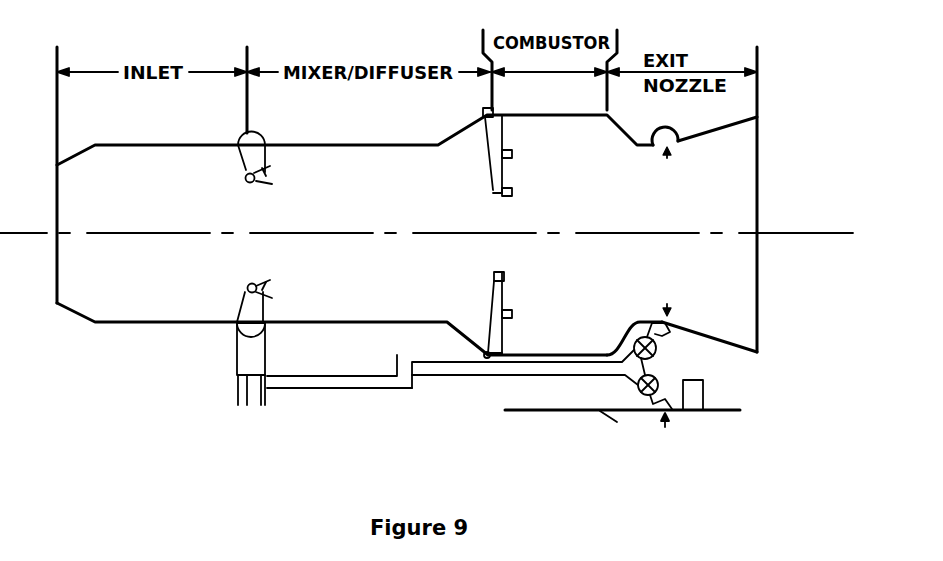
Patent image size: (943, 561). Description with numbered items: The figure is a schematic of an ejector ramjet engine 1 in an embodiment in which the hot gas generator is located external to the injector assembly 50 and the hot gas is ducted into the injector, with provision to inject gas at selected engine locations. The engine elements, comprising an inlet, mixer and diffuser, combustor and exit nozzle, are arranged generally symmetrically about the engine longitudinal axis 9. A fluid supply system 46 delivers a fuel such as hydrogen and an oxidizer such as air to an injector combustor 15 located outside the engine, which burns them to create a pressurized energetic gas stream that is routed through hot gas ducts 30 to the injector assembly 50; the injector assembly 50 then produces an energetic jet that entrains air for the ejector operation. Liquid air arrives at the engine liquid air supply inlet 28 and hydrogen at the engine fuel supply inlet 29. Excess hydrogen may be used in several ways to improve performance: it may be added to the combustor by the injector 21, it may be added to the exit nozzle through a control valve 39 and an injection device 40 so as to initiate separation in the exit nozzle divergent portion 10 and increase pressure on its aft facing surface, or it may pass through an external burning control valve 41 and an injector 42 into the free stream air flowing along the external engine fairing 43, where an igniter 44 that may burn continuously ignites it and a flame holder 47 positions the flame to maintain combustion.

The ejector ramjet engine 1 is at (128, 343).
The engine longitudinal axis 9 is at (815, 233).
The exit nozzle divergent portion 10 is at (724, 338).
The injector combustor 15 is at (245, 343).
The fuel injector 21 is at (503, 167).
The engine liquid air supply inlet 28 is at (237, 392).
The engine fuel supply inlet 29 is at (268, 397).
The hot gas duct 30 is at (240, 137).
The control valve 39 is at (658, 352).
The injection device 40 is at (680, 138).
The external burning control valve 41 is at (643, 398).
The injector 42 is at (675, 413).
The external engine fairing 43 is at (532, 412).
The igniter 44 is at (703, 388).
The fluid supply system 46 is at (320, 392).
The flame holder 47 is at (617, 422).
The injector assembly 50 is at (270, 172).